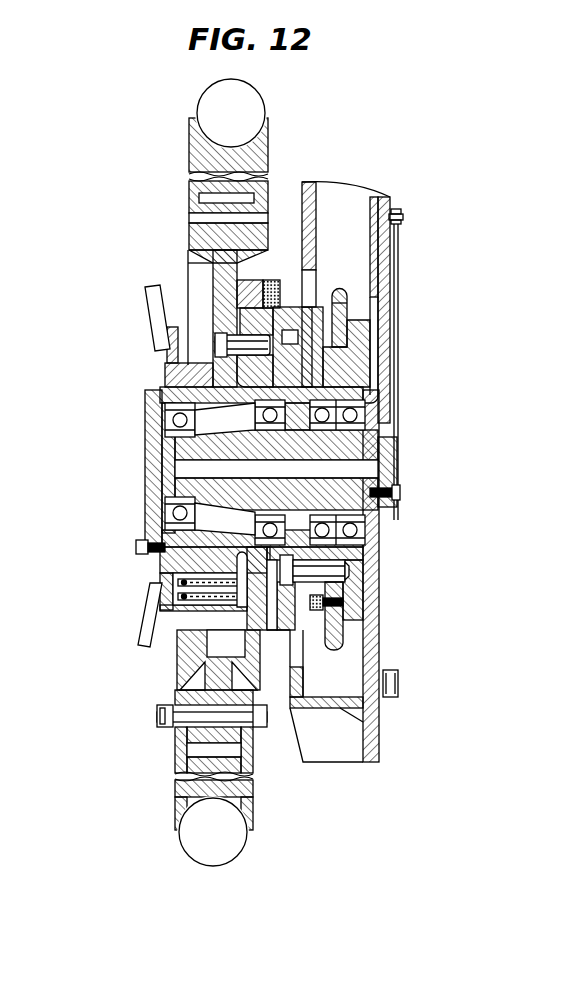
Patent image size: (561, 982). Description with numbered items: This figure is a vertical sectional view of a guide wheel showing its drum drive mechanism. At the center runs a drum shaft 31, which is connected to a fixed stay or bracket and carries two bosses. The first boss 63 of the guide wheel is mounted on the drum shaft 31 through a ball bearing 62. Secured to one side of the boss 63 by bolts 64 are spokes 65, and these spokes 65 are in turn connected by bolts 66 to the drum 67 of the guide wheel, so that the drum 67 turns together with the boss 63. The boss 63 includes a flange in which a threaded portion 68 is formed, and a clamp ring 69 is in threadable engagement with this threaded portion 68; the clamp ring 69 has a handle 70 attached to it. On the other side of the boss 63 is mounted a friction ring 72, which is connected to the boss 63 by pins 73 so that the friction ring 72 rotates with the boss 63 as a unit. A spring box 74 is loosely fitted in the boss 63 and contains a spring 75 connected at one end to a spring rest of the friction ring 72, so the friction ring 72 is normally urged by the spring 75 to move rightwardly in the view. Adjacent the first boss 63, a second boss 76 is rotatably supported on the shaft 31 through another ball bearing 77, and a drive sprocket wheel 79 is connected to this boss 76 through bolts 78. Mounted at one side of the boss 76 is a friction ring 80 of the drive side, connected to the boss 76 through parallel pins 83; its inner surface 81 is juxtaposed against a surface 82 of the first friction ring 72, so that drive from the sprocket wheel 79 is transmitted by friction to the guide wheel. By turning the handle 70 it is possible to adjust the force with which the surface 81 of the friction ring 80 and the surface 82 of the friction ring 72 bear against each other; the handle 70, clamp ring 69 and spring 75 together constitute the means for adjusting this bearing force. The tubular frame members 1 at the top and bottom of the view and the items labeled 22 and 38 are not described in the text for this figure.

The tubular frame member 1 is at (208, 105).
The drum 67 is at (190, 185).
The spokes 65 is at (216, 278).
The handle 70 is at (150, 290).
The bracket 22 is at (190, 320).
The pins 73 is at (225, 360).
The friction ring 72 is at (238, 383).
The ball bearing 62 is at (150, 440).
The boss 63 is at (165, 524).
The threaded portion 68 is at (140, 548).
The clamp ring 69 is at (175, 566).
The spring box 74 is at (185, 595).
The spring 75 is at (143, 627).
The surface 82 is at (235, 652).
The bolts 64 is at (195, 652).
The bolts 66 is at (165, 718).
The lower tube 38 is at (185, 792).
The drive sprocket wheel 79 is at (355, 293).
The boss 76 is at (398, 326).
The friction ring 80 is at (395, 366).
The ball bearing 77 is at (390, 388).
The drum shaft 31 is at (395, 416).
The parallel pins 83 is at (350, 568).
The bolts 78 is at (346, 600).
The inner surface 81 is at (346, 636).